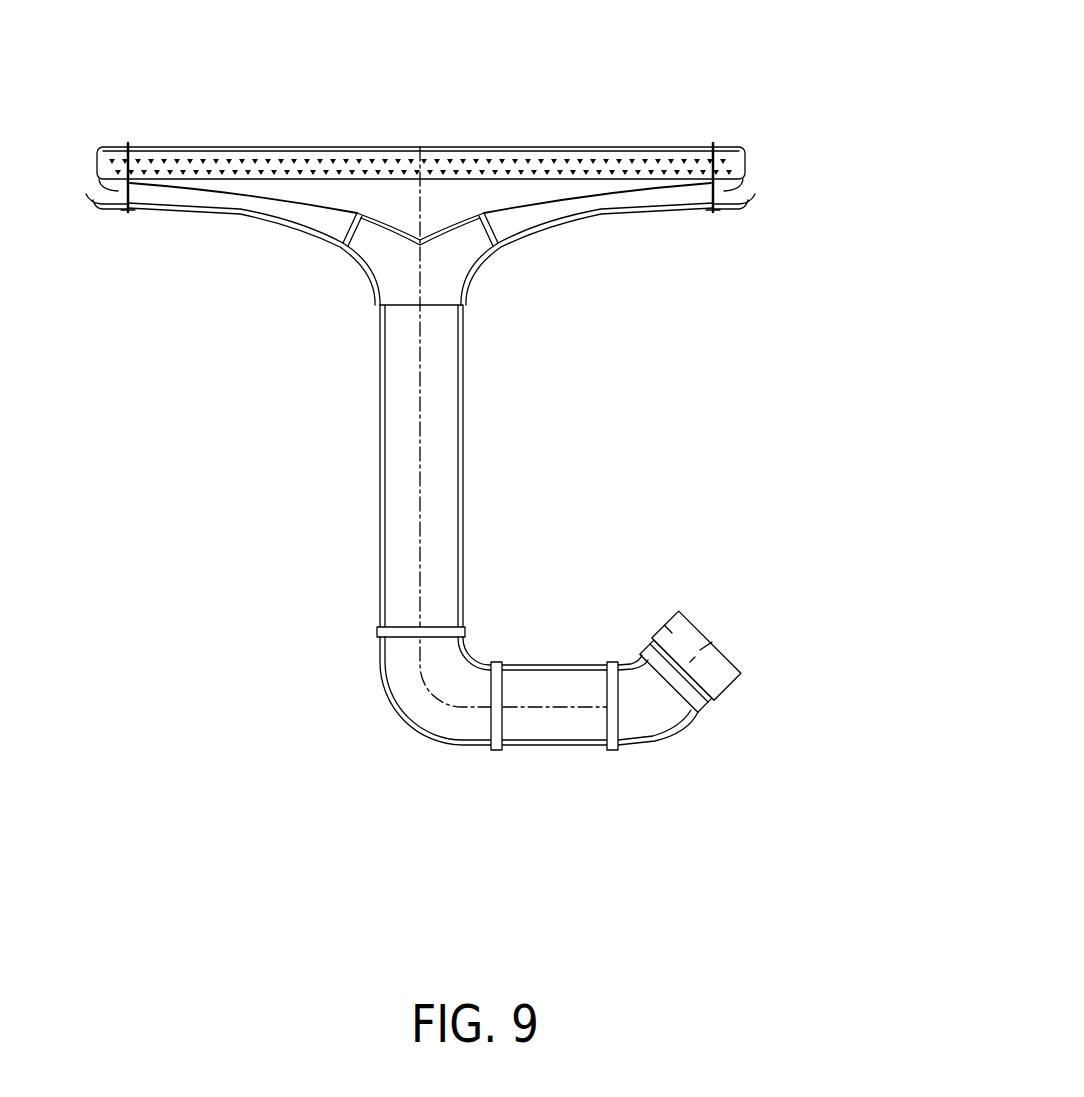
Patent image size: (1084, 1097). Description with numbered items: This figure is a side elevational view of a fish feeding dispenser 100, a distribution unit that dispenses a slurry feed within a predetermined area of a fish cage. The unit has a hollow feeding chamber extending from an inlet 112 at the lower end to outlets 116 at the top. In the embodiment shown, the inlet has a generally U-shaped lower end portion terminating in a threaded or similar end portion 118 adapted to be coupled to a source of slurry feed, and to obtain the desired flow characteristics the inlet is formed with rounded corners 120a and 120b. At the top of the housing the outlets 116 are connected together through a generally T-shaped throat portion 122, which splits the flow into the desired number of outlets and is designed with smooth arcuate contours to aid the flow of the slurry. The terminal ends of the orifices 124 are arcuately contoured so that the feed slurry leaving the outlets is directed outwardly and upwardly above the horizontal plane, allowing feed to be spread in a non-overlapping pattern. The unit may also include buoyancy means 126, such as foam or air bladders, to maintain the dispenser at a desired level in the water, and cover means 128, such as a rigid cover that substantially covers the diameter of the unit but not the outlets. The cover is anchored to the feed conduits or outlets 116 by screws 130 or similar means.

The fish feeding dispenser 100 is at (776, 83).
The inlet 112 is at (730, 620).
The outlet 116 is at (753, 182).
The threaded end portion 118 is at (717, 707).
The rounded corner 120a is at (662, 738).
The rounded corner 120b is at (407, 707).
The T-shaped throat portion 122 is at (463, 438).
The terminal ends of the orifices 124 is at (84, 196).
The buoyancy means 126 is at (298, 162).
The cover means 128 is at (507, 148).
The screws 130 is at (126, 146).